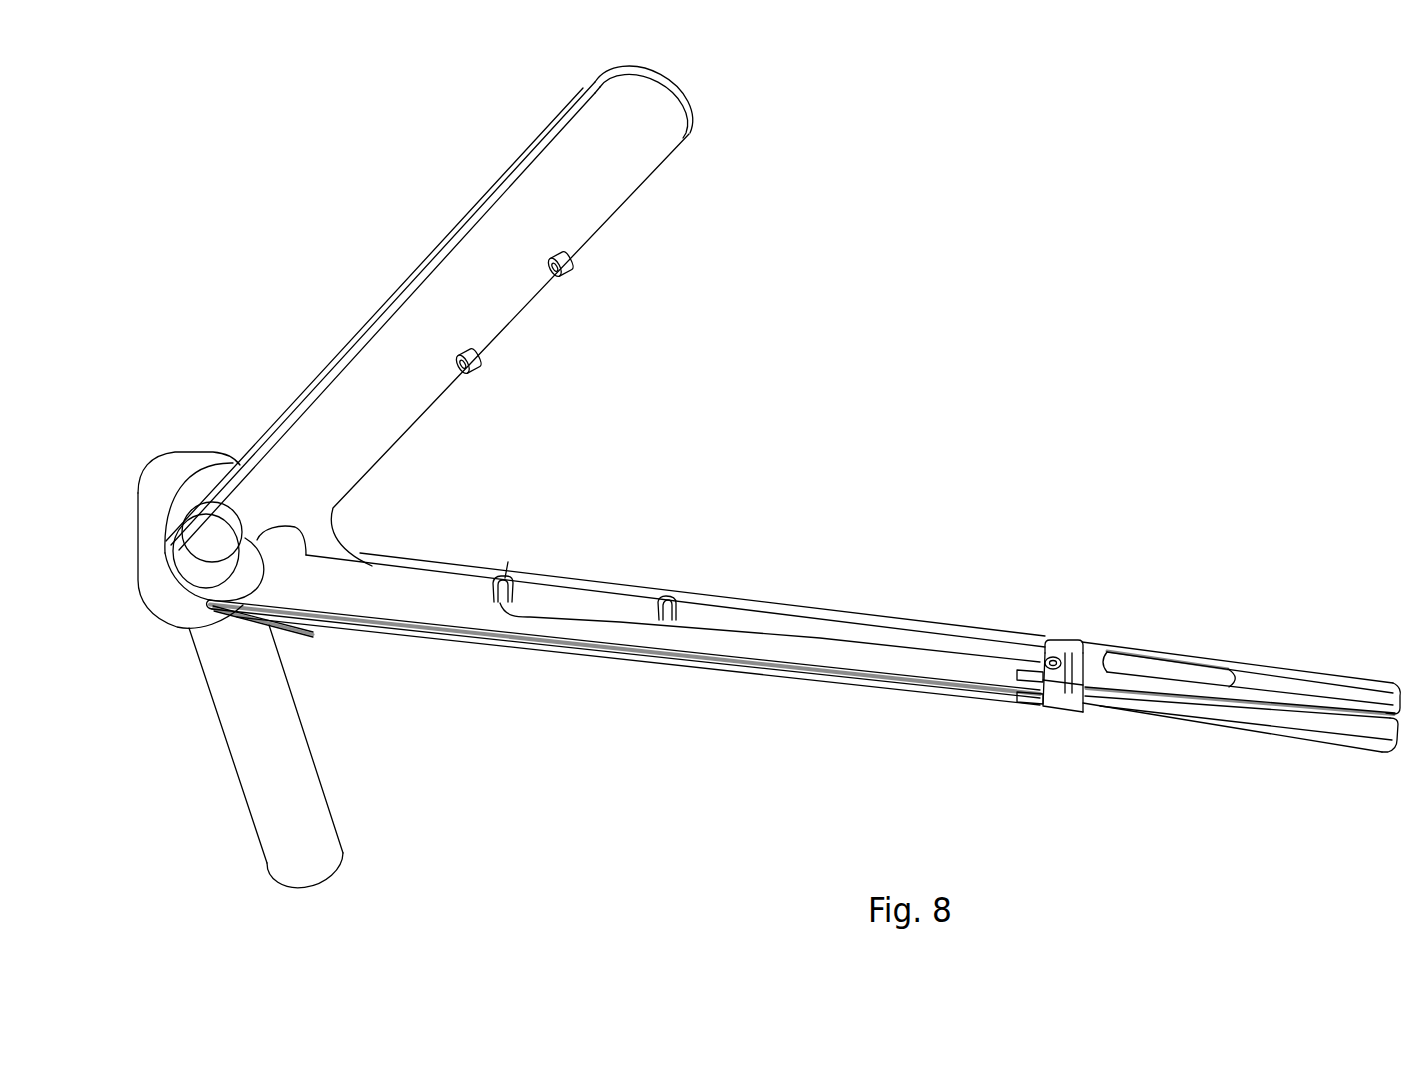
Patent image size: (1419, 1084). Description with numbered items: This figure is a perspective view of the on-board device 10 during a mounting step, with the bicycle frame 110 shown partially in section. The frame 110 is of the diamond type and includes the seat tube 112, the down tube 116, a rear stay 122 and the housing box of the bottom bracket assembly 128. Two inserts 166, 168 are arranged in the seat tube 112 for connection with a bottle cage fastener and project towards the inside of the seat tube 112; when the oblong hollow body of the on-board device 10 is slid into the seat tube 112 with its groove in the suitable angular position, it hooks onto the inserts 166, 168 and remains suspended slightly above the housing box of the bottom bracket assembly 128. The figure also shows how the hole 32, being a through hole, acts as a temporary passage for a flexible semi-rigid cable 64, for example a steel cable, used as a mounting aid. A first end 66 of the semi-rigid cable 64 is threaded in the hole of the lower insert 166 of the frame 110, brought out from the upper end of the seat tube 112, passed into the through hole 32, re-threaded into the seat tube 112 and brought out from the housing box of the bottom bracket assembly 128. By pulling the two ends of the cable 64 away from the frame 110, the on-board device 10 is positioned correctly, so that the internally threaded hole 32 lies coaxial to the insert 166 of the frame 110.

The on-board device 10 is at (1153, 709).
The hole 32 is at (1050, 656).
The flexible semi-rigid cable 64 is at (863, 643).
The first end of the semi-rigid cable 66 is at (293, 631).
The frame 110 is at (769, 477).
The seat tube 112 is at (445, 562).
The down tube 116 is at (483, 283).
The rear stay 122 is at (285, 808).
The housing box of the bottom bracket assembly 128 is at (215, 568).
The lower insert 166 is at (492, 590).
The upper insert 168 is at (655, 607).